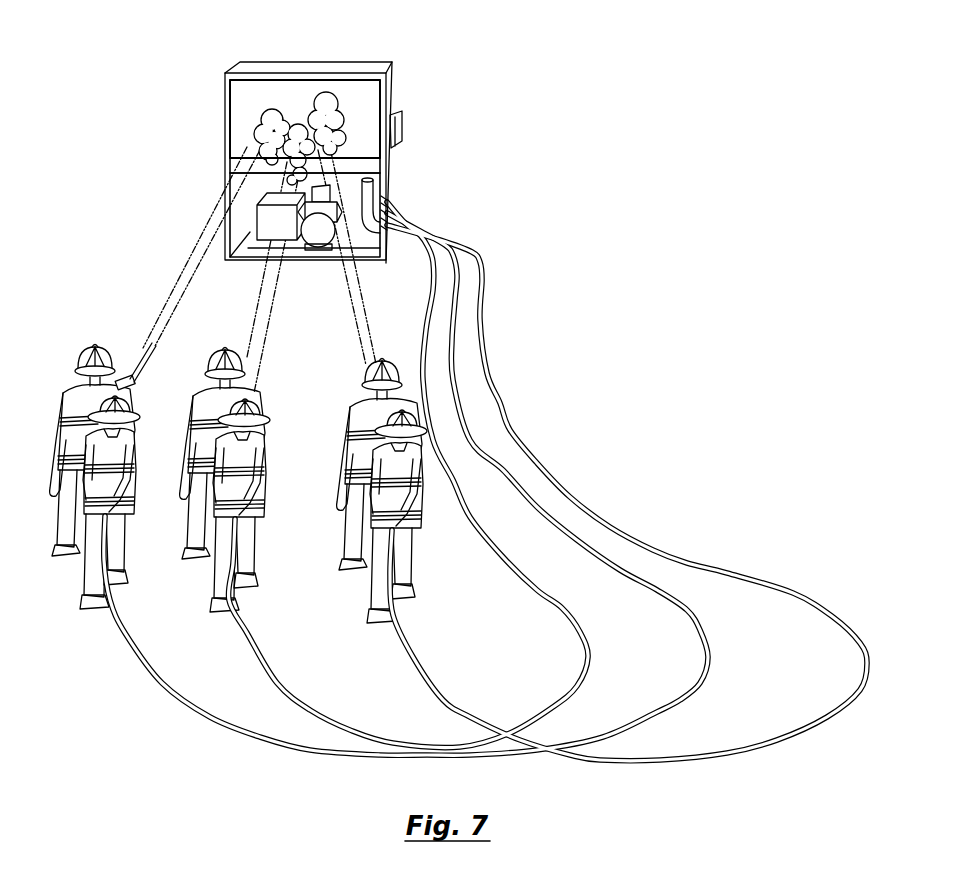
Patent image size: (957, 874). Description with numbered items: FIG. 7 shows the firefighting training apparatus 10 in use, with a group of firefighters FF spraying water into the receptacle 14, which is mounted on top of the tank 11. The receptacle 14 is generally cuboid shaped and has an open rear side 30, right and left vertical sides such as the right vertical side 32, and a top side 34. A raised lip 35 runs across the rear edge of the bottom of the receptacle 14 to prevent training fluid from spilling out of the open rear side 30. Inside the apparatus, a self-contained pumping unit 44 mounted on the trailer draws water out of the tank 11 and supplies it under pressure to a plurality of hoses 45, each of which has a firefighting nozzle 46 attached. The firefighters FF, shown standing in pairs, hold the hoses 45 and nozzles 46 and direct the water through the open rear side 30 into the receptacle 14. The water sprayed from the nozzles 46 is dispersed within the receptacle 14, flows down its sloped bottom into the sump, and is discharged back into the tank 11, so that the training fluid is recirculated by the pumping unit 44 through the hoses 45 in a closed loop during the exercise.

The firefighting training apparatus 10 is at (332, 162).
The tank 11 is at (403, 128).
The receptacle 14 is at (305, 162).
The open rear side 30 is at (237, 108).
The right vertical side 32 is at (393, 77).
The top side 34 is at (270, 63).
The raised lip 35 is at (370, 167).
The self-contained pumping unit 44 is at (322, 247).
The hoses 45 is at (244, 632).
The firefighting nozzles 46 is at (130, 375).
The firefighters FF is at (75, 395).